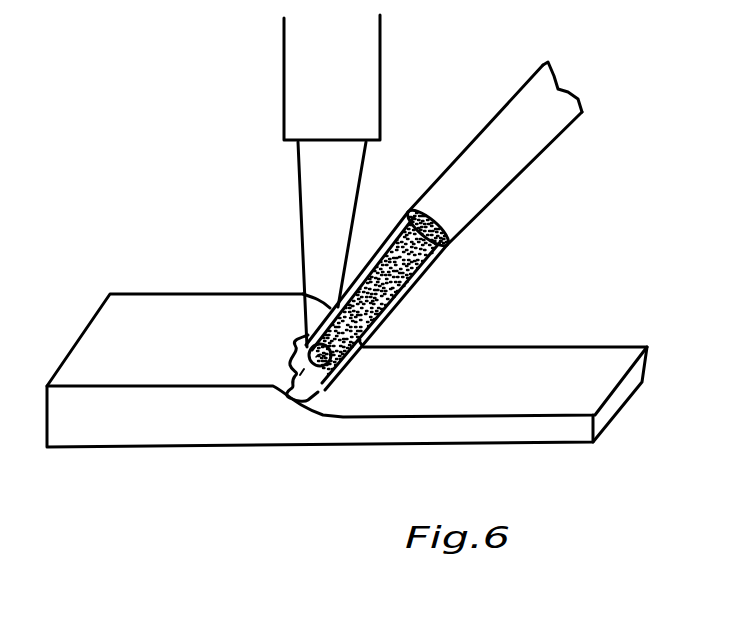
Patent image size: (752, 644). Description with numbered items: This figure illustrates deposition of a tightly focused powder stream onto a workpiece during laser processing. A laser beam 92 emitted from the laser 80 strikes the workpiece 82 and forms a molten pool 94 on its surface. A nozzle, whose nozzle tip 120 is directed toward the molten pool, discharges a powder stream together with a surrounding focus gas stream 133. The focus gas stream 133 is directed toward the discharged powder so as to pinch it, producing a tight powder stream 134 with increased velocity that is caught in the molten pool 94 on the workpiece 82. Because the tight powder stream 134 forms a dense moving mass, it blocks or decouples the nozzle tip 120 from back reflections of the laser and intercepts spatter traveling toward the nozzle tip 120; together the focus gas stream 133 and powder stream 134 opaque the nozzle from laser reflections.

The laser 80 is at (367, 60).
The laser beam 92 is at (313, 180).
The nozzle tip 120 is at (533, 145).
The focus gas stream 133 is at (382, 240).
The tight powder stream 134 is at (393, 297).
The molten pool 94 is at (347, 357).
The workpiece 82 is at (578, 357).